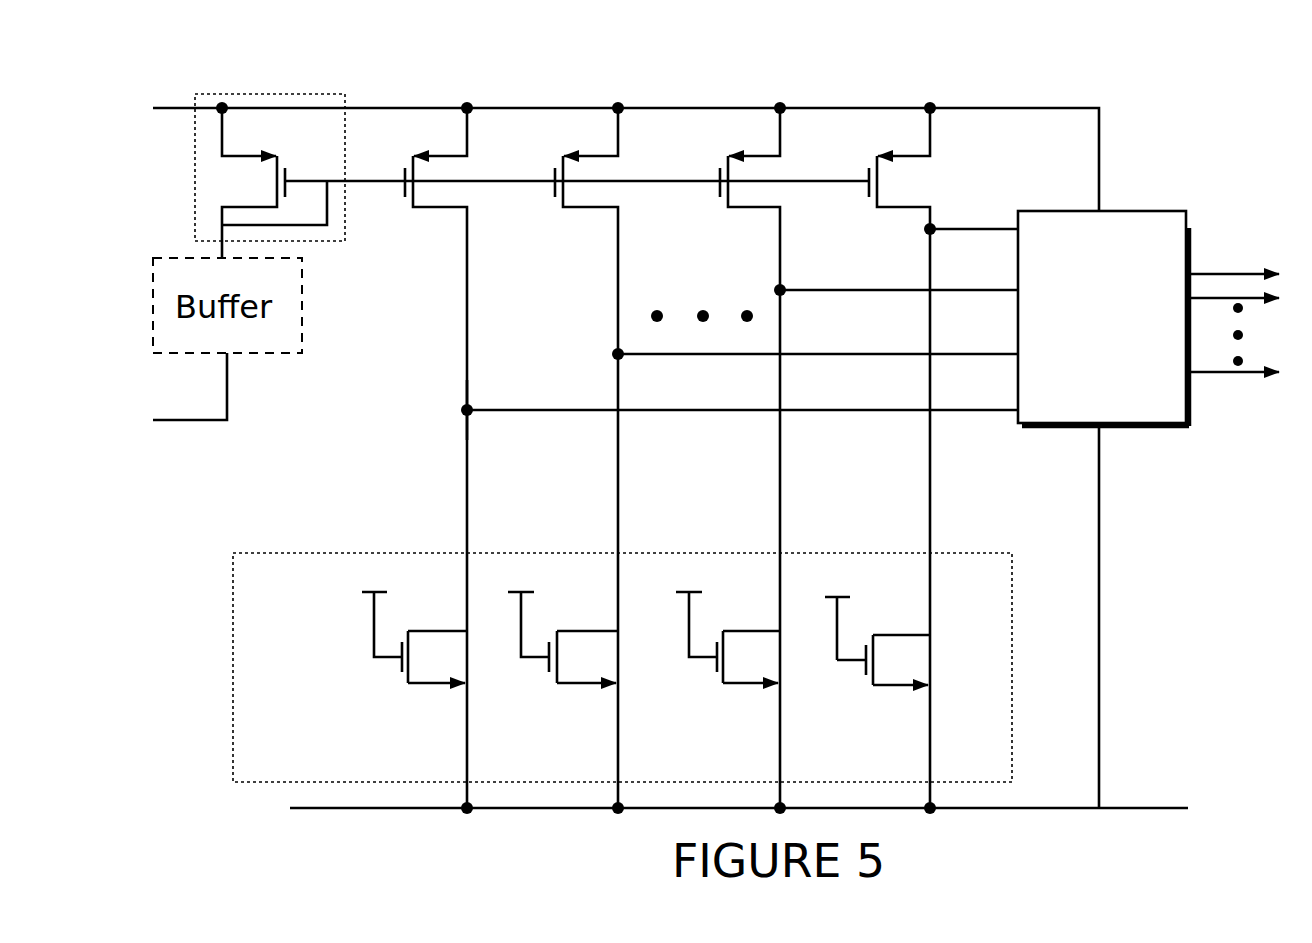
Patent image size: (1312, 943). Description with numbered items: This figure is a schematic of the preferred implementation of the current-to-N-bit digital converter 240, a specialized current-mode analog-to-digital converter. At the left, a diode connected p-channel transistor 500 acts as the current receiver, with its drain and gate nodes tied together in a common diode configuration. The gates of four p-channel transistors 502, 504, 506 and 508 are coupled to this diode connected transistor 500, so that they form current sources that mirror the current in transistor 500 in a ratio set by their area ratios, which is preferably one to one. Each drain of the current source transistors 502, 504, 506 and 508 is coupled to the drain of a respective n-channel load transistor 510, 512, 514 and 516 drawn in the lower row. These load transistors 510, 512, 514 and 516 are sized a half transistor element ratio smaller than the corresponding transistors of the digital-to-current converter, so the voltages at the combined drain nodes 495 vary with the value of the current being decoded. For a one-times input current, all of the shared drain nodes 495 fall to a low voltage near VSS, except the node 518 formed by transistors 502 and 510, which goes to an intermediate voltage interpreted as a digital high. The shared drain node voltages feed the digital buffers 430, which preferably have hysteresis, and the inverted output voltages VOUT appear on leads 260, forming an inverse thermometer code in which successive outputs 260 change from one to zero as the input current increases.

The current-to-N-bit digital converter 240 is at (612, 85).
The diode connected p-channel transistor 500 is at (208, 93).
The current source transistor 502 is at (535, 150).
The current source transistor 504 is at (630, 168).
The current source transistor 506 is at (795, 168).
The current source transistor 508 is at (938, 173).
The n-channel load transistor 510 is at (390, 677).
The n-channel load transistor 512 is at (540, 677).
The n-channel load transistor 514 is at (702, 677).
The n-channel load transistor 516 is at (852, 679).
The node 518 is at (468, 410).
The shared drain nodes 495 is at (425, 361).
The digital buffers 430 is at (1133, 211).
The leads 260 is at (1218, 394).